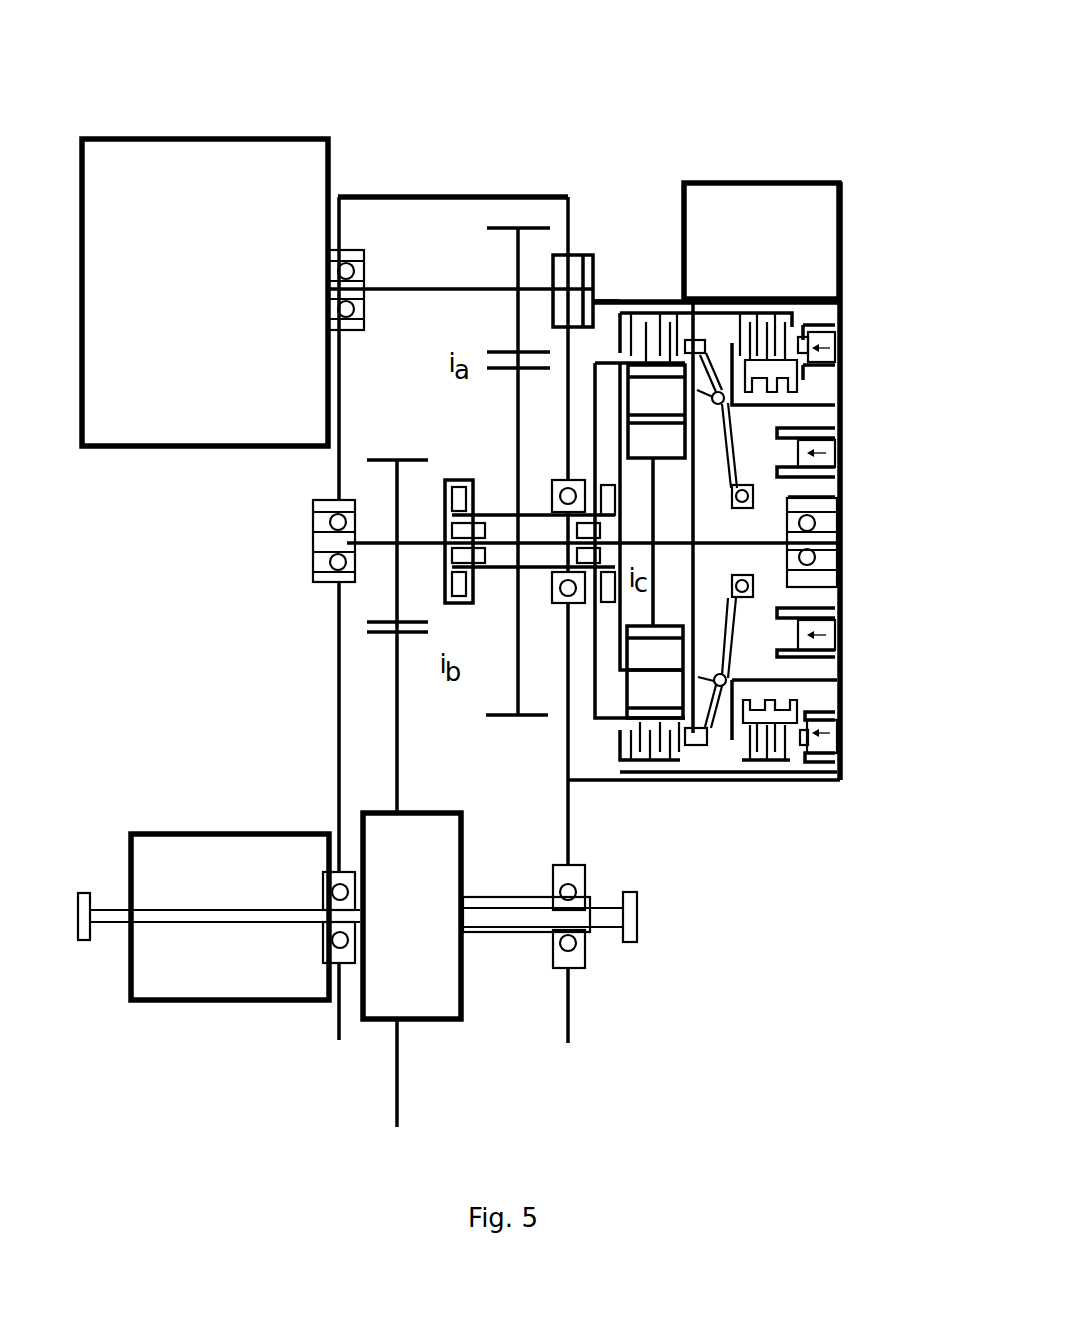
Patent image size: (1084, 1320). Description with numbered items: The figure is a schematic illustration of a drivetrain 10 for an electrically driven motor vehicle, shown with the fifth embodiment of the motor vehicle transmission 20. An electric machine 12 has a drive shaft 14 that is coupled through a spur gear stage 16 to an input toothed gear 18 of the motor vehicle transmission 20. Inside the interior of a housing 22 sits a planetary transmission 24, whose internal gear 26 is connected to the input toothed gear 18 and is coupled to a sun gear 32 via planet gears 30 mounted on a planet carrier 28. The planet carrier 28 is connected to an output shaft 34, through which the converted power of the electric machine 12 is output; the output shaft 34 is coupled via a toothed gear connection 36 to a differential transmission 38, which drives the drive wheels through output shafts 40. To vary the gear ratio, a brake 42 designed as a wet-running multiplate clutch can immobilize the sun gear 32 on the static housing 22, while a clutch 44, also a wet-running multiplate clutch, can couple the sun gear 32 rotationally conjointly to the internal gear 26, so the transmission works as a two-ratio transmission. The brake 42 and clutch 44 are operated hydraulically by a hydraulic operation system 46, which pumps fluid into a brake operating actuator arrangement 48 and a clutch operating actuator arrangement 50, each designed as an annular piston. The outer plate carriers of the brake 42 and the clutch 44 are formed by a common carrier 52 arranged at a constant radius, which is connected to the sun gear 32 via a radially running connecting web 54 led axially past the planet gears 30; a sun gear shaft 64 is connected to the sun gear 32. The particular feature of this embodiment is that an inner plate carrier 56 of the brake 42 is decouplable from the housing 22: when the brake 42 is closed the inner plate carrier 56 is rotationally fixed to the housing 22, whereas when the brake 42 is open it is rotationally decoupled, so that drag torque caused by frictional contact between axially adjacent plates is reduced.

The drivetrain 10 is at (790, 78).
The electric machine 12 is at (231, 136).
The drive shaft 14 is at (380, 288).
The spur gear stage 16 is at (492, 322).
The input toothed gear 18 is at (520, 433).
The motor vehicle transmission 20 is at (676, 812).
The housing 22 is at (838, 380).
The planetary transmission 24 is at (604, 748).
The internal gear 26 is at (603, 364).
The planet carrier 28 is at (620, 435).
The planet gears 30 is at (648, 366).
The sun gear 32 is at (654, 578).
The output shaft 34 is at (369, 543).
The toothed gear connection 36 is at (372, 650).
The differential transmission 38 is at (397, 970).
The output shafts 40 is at (107, 913).
The brake 42 is at (770, 738).
The clutch 44 is at (667, 740).
The hydraulic operation system 46 is at (790, 235).
The brake operating actuator arrangement 48 is at (823, 338).
The clutch operating actuator arrangement 50 is at (816, 460).
The carrier 52 is at (717, 313).
The connecting web 54 is at (695, 509).
The inner plate carrier 56 is at (782, 370).
The sun gear shaft 64 is at (735, 543).